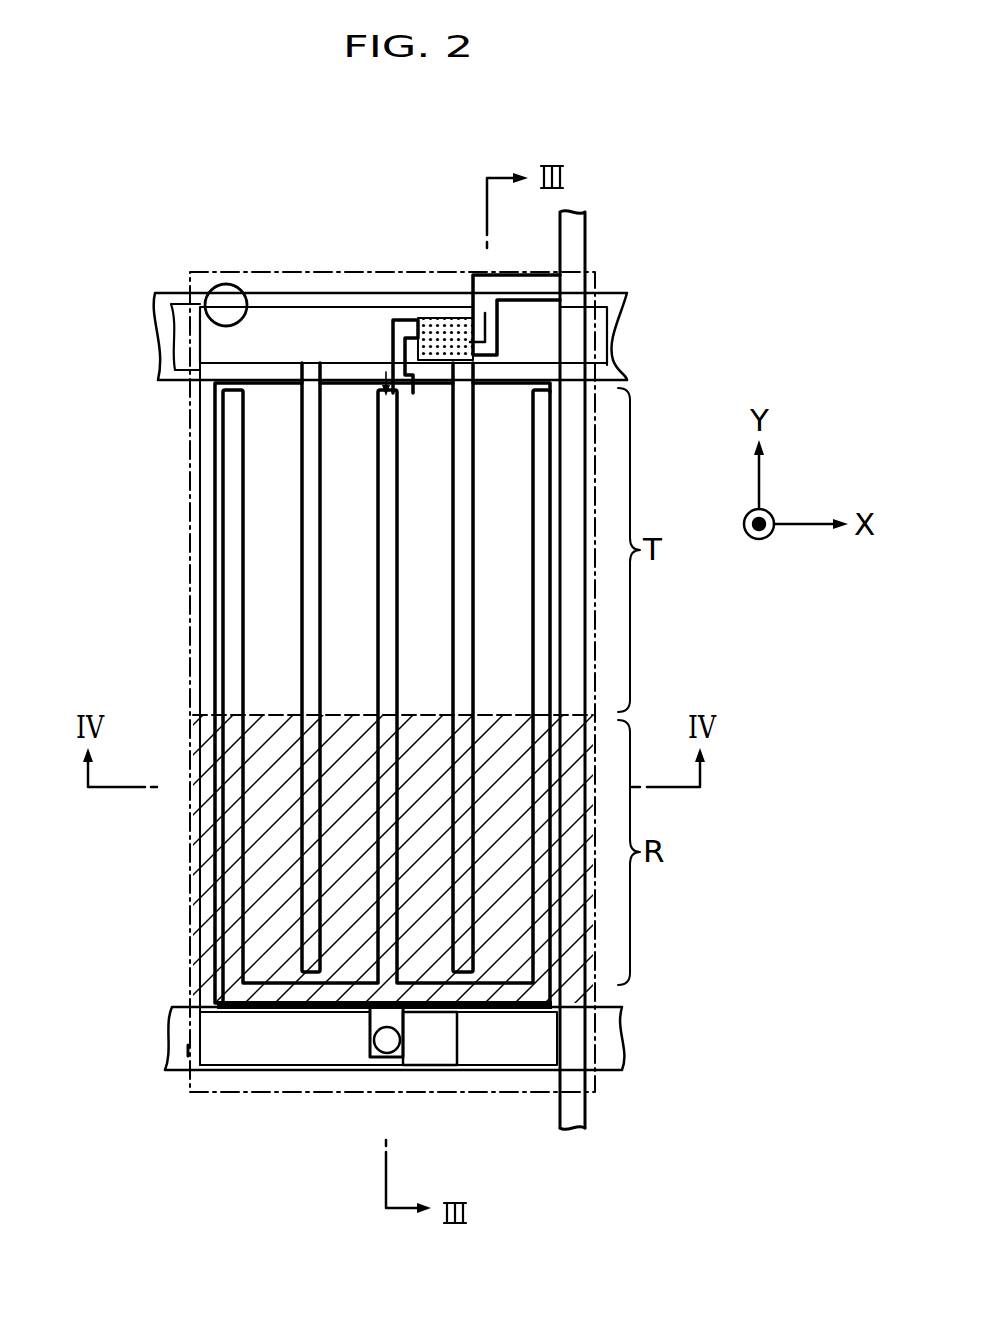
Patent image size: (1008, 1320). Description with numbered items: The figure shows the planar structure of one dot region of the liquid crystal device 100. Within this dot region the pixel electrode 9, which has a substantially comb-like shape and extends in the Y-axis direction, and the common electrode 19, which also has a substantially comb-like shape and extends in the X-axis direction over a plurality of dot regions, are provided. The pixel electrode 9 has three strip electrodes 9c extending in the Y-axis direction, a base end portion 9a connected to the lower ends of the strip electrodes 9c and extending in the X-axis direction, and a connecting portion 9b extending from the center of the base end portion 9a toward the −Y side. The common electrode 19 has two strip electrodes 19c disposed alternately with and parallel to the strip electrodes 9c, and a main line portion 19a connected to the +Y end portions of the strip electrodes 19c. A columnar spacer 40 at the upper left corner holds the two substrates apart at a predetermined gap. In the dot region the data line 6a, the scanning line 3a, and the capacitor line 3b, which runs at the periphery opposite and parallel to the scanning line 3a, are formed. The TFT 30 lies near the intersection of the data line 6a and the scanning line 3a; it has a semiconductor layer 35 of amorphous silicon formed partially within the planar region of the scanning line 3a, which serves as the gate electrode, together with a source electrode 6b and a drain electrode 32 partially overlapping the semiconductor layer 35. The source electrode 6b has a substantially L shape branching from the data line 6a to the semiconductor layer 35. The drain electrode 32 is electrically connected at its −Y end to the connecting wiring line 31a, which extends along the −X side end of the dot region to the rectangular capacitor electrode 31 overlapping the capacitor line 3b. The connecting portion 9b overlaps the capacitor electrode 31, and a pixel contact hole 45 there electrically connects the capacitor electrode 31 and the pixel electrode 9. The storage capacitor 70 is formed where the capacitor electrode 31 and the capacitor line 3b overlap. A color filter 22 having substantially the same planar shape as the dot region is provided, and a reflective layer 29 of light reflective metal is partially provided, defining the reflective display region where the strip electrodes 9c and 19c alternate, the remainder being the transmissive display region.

The liquid crystal device 100 is at (668, 236).
The color filter 22 is at (189, 413).
The scanning line 3a is at (181, 315).
The capacitor line 3b is at (173, 1007).
The data line 6a is at (581, 1118).
The source electrode 6b is at (522, 286).
The pixel electrode 9 is at (333, 770).
The base end portion 9a is at (287, 992).
The connecting portion 9b is at (383, 1018).
The strip electrodes 9c is at (387, 422).
The common electrode 19 is at (340, 287).
The main line portion 19a is at (170, 380).
The strip electrodes 19c is at (463, 503).
The reflective layer 29 is at (277, 713).
The TFT 30 is at (410, 277).
The capacitor electrode 31 is at (263, 1050).
The connecting wiring line 31a is at (338, 366).
The drain electrode 32 is at (403, 328).
The semiconductor layer 35 is at (452, 332).
The columnar spacer 40 is at (226, 301).
The pixel contact hole 45 is at (397, 1046).
The storage capacitor 70 is at (207, 1050).